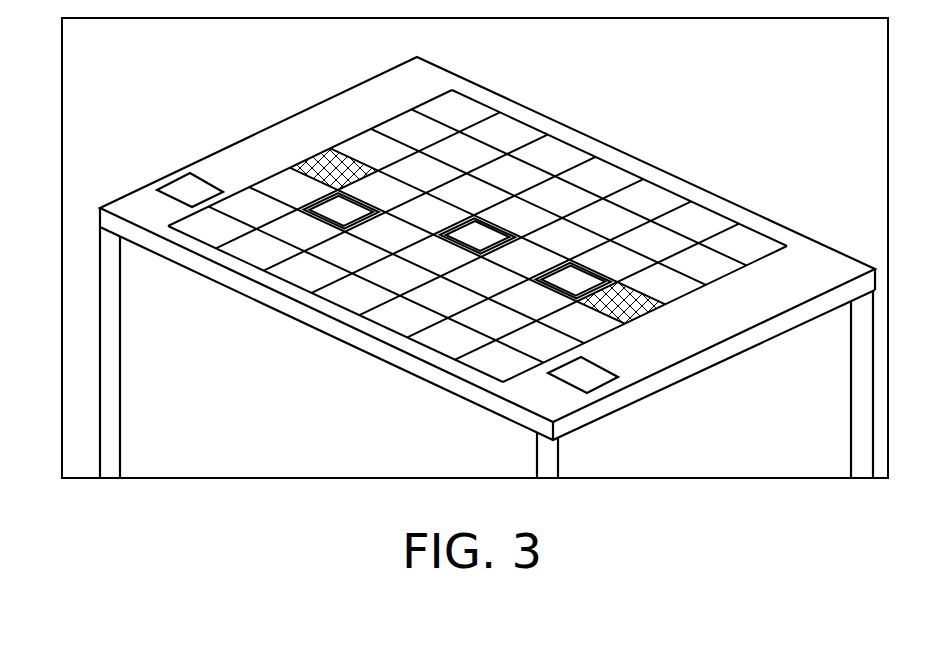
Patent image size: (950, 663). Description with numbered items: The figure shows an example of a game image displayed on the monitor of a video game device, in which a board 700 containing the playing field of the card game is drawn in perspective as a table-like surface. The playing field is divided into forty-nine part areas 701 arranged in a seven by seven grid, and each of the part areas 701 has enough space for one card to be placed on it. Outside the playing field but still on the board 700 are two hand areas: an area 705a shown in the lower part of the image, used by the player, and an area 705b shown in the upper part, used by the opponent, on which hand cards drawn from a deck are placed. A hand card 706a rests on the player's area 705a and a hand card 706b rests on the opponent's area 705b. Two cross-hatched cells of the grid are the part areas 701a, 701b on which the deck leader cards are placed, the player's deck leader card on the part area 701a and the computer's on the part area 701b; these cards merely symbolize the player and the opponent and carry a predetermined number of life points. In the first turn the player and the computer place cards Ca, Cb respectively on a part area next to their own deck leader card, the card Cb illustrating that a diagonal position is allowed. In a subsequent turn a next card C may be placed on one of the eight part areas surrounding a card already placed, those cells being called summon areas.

The board 700 is at (776, 179).
The part areas 701 is at (455, 108).
The part area 701a is at (635, 307).
The part area 701b is at (327, 173).
The area 705a is at (652, 348).
The area 705b is at (388, 97).
The hand card 706a is at (588, 375).
The hand card 706b is at (187, 190).
The next card C is at (485, 238).
The card Ca is at (578, 285).
The card Cb is at (340, 210).